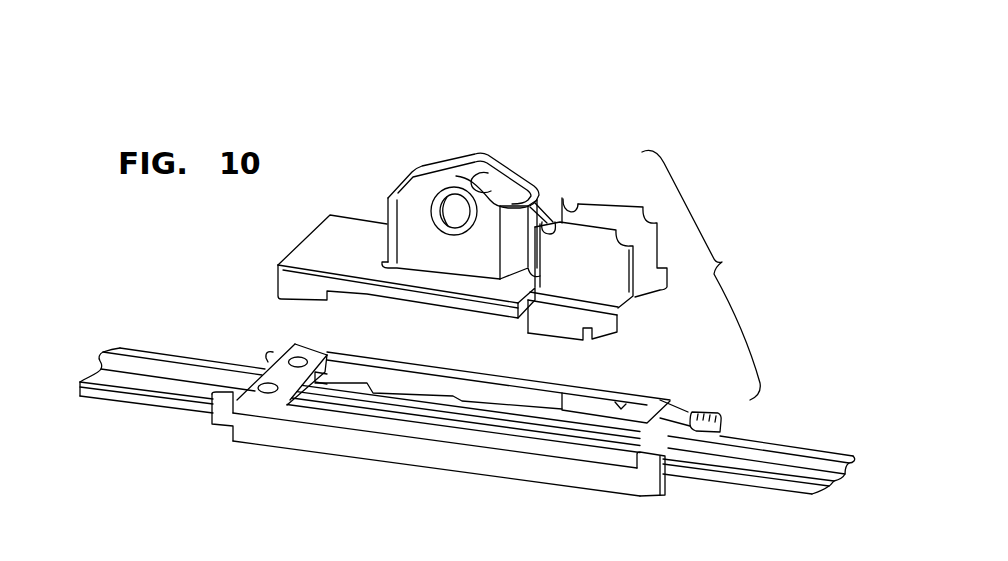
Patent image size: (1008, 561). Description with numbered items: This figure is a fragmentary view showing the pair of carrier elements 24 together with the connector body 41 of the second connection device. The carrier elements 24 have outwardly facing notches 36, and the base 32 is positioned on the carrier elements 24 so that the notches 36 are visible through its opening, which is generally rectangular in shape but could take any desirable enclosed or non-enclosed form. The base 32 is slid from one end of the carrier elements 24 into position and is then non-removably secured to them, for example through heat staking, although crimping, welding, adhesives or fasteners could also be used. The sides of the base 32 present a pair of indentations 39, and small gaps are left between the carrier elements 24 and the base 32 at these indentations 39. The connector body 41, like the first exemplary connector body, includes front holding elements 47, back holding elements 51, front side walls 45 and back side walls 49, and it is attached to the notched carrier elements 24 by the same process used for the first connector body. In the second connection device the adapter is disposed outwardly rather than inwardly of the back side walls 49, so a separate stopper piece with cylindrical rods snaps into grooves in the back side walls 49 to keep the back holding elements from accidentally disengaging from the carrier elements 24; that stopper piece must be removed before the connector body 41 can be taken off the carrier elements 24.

The carrier elements 24 is at (773, 451).
The base 32 is at (466, 434).
The notches 36 is at (403, 395).
The indentations 39 is at (633, 403).
The connector body 41 is at (563, 143).
The front side walls 45 is at (417, 208).
The front holding elements 47 is at (330, 302).
The back side walls 49 is at (617, 285).
The back holding elements 51 is at (587, 344).